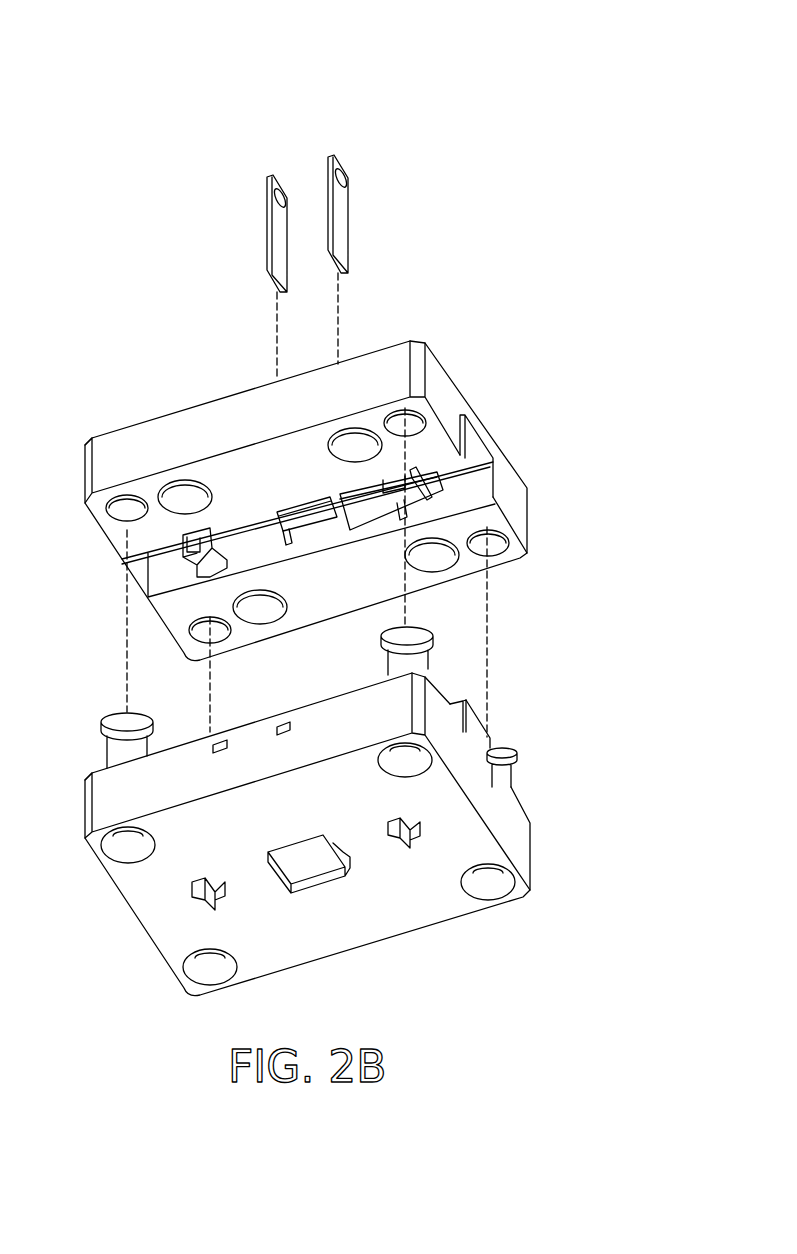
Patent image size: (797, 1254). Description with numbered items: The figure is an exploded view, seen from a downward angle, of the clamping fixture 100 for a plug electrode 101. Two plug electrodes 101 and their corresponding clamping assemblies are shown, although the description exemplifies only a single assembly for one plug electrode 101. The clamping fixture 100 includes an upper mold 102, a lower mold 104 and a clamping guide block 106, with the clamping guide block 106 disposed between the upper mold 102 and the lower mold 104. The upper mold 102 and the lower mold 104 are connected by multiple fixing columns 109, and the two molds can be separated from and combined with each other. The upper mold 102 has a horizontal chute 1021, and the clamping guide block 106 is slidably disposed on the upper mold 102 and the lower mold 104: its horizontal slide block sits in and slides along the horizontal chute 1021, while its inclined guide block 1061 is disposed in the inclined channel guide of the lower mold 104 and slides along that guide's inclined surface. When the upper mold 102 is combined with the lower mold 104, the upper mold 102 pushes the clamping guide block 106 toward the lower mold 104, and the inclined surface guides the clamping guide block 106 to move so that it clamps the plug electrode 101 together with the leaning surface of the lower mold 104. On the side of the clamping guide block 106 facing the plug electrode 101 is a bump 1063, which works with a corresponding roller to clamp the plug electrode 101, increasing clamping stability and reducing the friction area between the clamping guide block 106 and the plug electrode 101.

The clamping fixture 100 is at (100, 48).
The plug electrode 101 is at (283, 183).
The upper mold 102 is at (333, 514).
The horizontal chute 1021 is at (483, 459).
The lower mold 104 is at (527, 808).
The clamping guide block 106 is at (333, 572).
The inclined guide block 1061 is at (432, 486).
The bump 1063 is at (283, 532).
The fixing column 109 is at (413, 663).